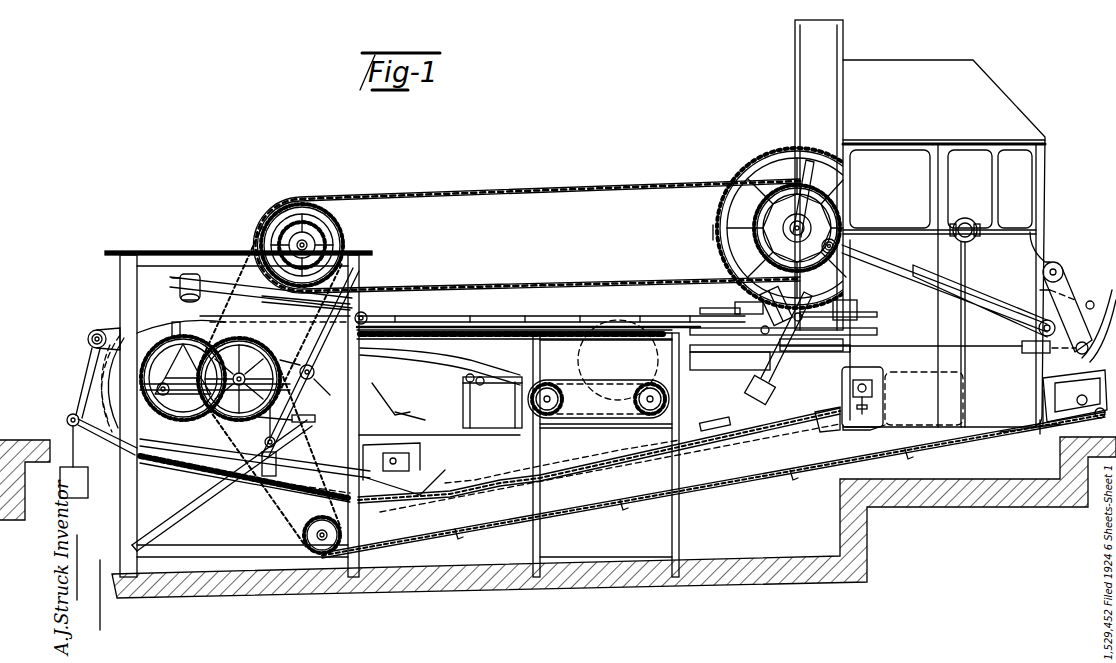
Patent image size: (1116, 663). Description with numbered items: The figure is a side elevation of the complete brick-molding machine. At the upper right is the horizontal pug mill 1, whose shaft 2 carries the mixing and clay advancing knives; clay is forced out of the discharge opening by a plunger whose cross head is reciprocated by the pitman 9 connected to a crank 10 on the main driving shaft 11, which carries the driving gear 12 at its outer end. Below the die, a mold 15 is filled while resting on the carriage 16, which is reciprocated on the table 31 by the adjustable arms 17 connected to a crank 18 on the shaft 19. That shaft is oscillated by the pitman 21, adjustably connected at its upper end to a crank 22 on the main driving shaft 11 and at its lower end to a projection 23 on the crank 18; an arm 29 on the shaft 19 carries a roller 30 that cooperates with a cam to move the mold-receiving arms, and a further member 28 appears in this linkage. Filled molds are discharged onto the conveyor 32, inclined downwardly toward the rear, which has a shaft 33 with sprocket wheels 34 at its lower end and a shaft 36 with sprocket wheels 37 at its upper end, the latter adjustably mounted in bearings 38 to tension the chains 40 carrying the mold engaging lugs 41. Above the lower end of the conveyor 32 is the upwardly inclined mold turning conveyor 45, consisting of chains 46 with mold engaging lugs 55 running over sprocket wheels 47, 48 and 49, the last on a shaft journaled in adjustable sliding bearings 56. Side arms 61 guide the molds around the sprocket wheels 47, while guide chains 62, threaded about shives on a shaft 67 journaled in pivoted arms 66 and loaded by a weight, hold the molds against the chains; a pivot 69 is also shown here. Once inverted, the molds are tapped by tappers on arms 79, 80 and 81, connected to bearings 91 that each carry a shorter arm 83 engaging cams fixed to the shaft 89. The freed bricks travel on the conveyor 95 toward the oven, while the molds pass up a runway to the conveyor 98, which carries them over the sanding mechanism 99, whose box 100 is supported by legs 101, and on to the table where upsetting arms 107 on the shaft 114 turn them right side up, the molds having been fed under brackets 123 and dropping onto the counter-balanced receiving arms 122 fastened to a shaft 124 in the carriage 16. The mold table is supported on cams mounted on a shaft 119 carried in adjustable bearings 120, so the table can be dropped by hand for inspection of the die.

The horizontal pug mill 1 is at (968, 165).
The shaft 2 is at (965, 218).
The pitman 9 is at (809, 196).
The crank 10 is at (768, 262).
The main driving shaft 11 is at (713, 233).
The driving gear 12 is at (799, 214).
The mold 15 is at (475, 318).
The carriage 16 is at (815, 348).
The adjustable arms 17 is at (995, 350).
The crank 18 is at (1060, 305).
The shaft 19 is at (1060, 266).
The pitman 21 is at (992, 306).
The crank 22 is at (834, 240).
The projection 23 is at (1030, 344).
The arm 28 is at (1080, 353).
The arm 29 is at (1083, 287).
The roller 30 is at (1040, 291).
The table 31 is at (745, 360).
The conveyor 32 is at (752, 430).
The shaft 33 is at (271, 387).
The sprocket wheels 34 is at (302, 535).
The shaft 36 is at (1068, 386).
The sprocket wheels 37 is at (1064, 436).
The bearings 38 is at (1104, 420).
The chains 40 is at (765, 478).
The mold engaging lugs 41 is at (912, 458).
The mold turning conveyor 45 is at (262, 490).
The chains 46 is at (391, 397).
The sprocket wheels 47 is at (163, 383).
The sprocket wheels 48 is at (306, 387).
The sprocket wheels 49 is at (422, 452).
The mold engaging lugs 55 is at (405, 414).
The adjustable sliding bearings 56 is at (425, 470).
The side arms 61 is at (88, 342).
The guide chains 62 is at (80, 378).
The pivoted arms 66 is at (98, 458).
The shaft 67 is at (66, 420).
The pivot 69 is at (279, 438).
The arm 79 is at (222, 283).
The arm 80 is at (178, 284).
The arm 81 is at (182, 299).
The shorter arm 83 is at (343, 228).
The shaft 89 is at (266, 234).
The bearings 91 is at (368, 310).
The conveyor 95 is at (432, 368).
The conveyor 98 is at (518, 330).
The sanding mechanism 99 is at (598, 369).
The box 100 is at (552, 380).
The legs 101 is at (675, 532).
The upsetting arms 107 is at (760, 302).
The shaft 114 is at (760, 334).
The shaft 119 is at (872, 386).
The adjustable bearings 120 is at (868, 398).
The counter-balanced receiving arms 122 is at (852, 316).
The brackets 123 is at (708, 312).
The shaft 124 is at (767, 386).